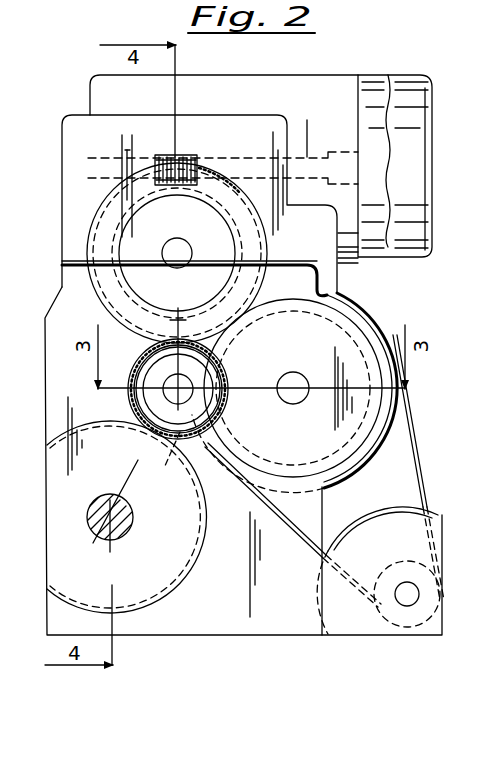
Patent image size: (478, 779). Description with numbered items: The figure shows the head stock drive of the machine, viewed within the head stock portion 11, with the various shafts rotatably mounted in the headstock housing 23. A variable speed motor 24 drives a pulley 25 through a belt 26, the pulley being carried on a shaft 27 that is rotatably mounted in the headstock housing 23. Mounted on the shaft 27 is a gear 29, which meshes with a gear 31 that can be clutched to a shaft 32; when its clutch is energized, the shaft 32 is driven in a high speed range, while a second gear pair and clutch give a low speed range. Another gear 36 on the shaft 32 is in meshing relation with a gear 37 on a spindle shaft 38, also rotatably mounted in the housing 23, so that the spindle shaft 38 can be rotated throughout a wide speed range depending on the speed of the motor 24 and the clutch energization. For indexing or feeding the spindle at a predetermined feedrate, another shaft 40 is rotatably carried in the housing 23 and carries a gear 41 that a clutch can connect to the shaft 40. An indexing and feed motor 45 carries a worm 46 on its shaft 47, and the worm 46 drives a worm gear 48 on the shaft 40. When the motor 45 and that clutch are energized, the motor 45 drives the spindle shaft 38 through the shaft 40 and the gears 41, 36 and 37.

The head stock portion 11 is at (71, 105).
The headstock housing 23 is at (197, 607).
The variable speed motor 24 is at (370, 530).
The pulley 25 is at (387, 423).
The belt 26 is at (414, 460).
The shaft 27 is at (293, 400).
The gear 29 is at (356, 340).
The gear 31 is at (220, 356).
The shaft 32 is at (168, 397).
The gear 36 is at (160, 342).
The gear 37 is at (163, 464).
The spindle shaft 38 is at (124, 536).
The shaft 40 is at (176, 252).
The gear 41 is at (153, 342).
The indexing and feed motor 45 is at (414, 243).
The worm 46 is at (177, 157).
The shaft 47 is at (246, 160).
The worm gear 48 is at (120, 190).